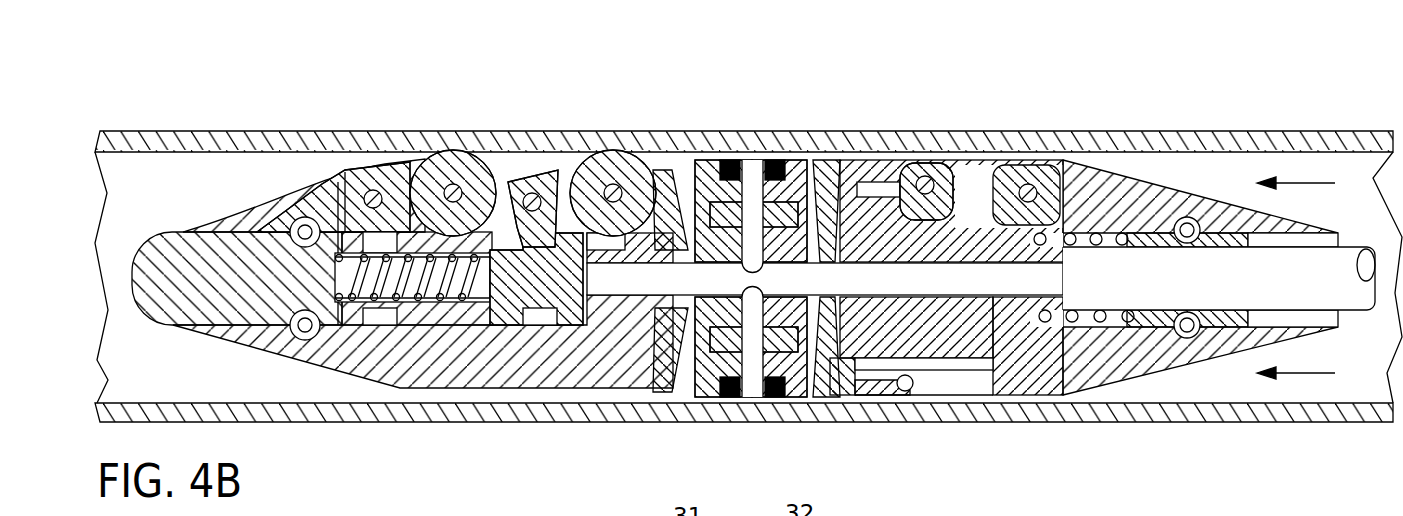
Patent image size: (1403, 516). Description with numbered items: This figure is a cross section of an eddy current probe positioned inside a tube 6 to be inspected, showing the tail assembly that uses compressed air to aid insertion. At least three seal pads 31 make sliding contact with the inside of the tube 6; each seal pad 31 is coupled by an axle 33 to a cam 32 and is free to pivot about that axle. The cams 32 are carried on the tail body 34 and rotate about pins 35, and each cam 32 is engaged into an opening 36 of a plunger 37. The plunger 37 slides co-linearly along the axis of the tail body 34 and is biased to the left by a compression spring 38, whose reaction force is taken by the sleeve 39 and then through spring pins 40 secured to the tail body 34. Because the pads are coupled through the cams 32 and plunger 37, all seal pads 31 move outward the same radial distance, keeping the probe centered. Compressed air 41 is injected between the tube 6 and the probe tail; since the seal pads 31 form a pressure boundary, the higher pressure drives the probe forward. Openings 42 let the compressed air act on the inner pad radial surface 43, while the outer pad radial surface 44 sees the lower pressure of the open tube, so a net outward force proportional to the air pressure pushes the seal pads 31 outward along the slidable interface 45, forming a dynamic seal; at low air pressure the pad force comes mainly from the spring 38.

The tube 6 is at (255, 132).
The slidable interface 45 is at (838, 175).
The seal pads 31 is at (862, 175).
The axle 33 is at (920, 172).
The cam 32 is at (1010, 172).
The pins 35 is at (1027, 175).
The compression spring 38 is at (1097, 237).
The tail body 34 is at (1160, 197).
The spring pins 40 is at (1193, 210).
The air 41 is at (1305, 182).
The outer pad radial surface 44 is at (872, 380).
The inner pad radial surface 43 is at (915, 385).
The openings 42 is at (958, 388).
The plunger 37 is at (1007, 317).
The opening 36 is at (960, 327).
The sleeve 39 is at (1222, 327).